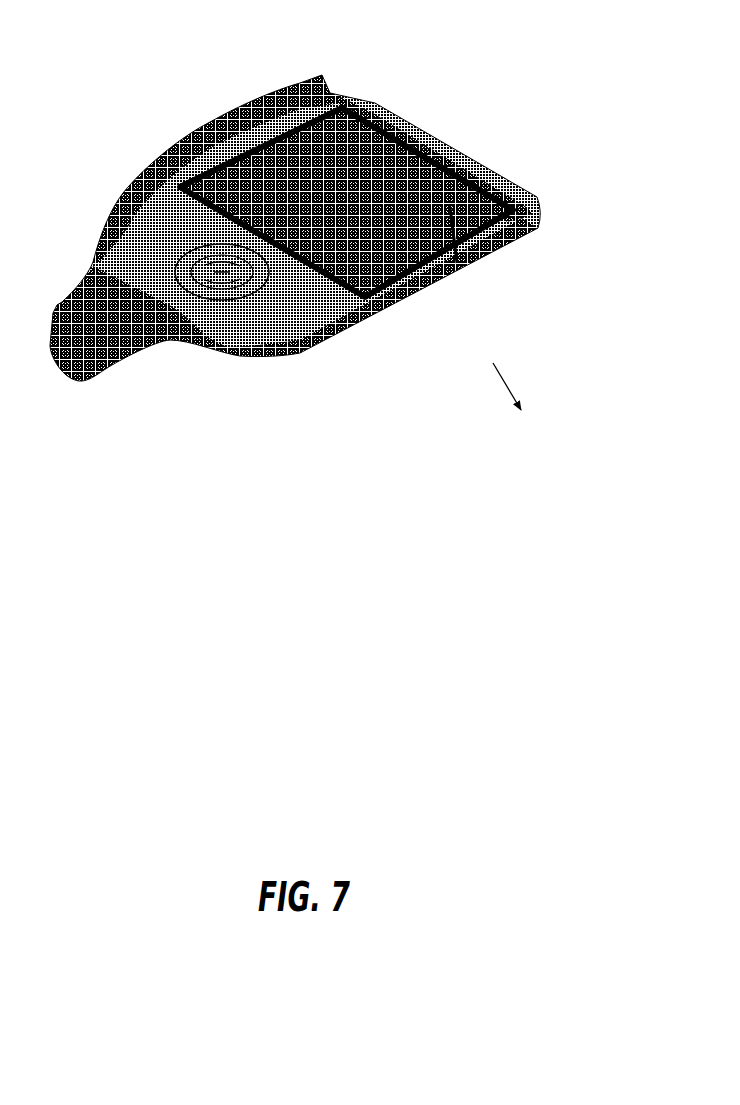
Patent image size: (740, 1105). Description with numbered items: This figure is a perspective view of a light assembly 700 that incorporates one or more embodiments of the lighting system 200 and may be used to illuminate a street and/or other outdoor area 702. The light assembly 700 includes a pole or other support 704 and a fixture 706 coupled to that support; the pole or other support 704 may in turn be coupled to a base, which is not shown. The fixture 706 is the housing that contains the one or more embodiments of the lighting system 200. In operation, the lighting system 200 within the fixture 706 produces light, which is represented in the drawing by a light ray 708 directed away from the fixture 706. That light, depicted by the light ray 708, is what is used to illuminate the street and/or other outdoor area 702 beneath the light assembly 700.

The light assembly 700 is at (318, 227).
The fixture 706 is at (484, 148).
The lighting system 200 is at (460, 268).
The pole or other support 704 is at (108, 370).
The light ray 708 is at (514, 405).
The street and/or other outdoor area 702 is at (511, 671).